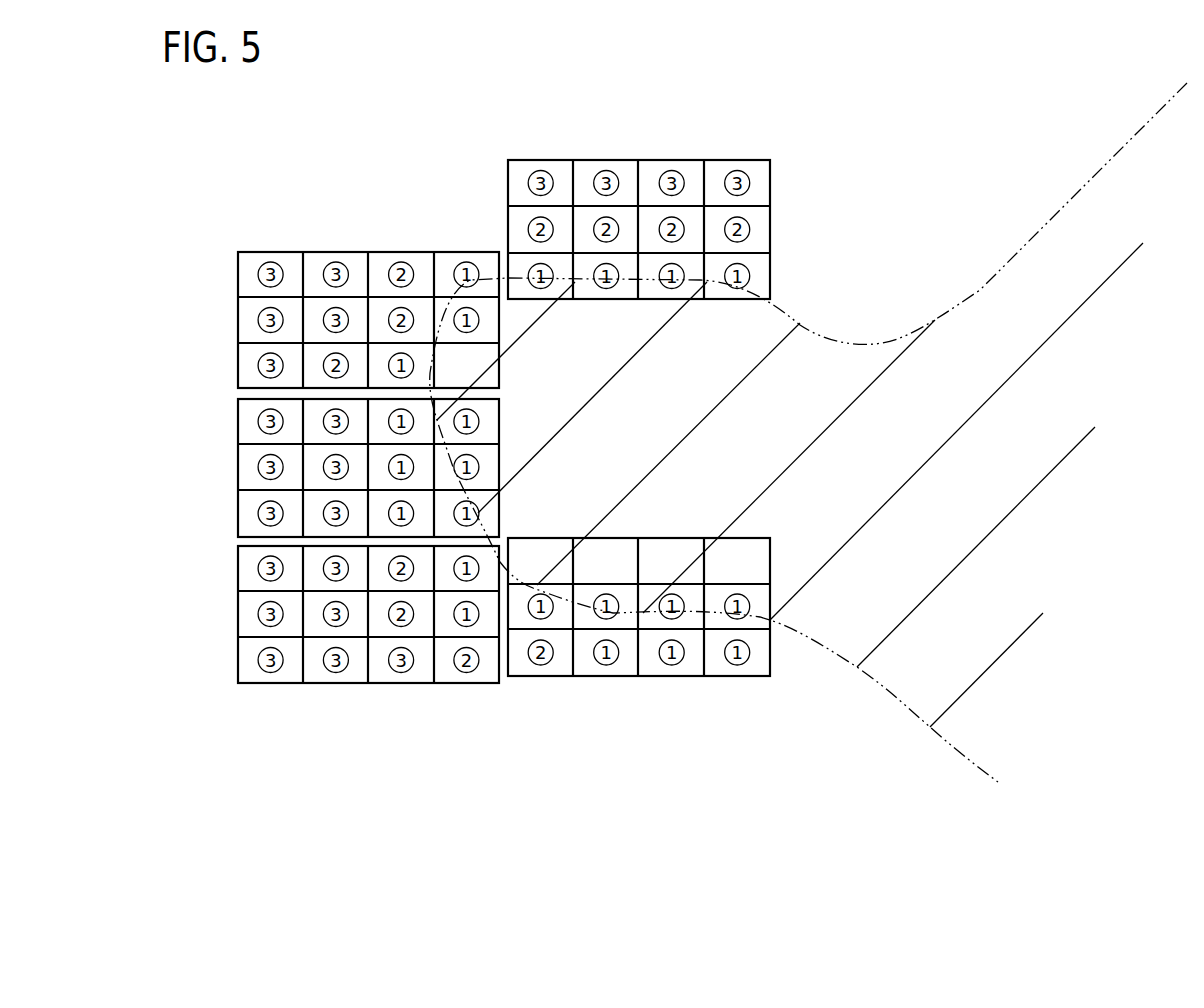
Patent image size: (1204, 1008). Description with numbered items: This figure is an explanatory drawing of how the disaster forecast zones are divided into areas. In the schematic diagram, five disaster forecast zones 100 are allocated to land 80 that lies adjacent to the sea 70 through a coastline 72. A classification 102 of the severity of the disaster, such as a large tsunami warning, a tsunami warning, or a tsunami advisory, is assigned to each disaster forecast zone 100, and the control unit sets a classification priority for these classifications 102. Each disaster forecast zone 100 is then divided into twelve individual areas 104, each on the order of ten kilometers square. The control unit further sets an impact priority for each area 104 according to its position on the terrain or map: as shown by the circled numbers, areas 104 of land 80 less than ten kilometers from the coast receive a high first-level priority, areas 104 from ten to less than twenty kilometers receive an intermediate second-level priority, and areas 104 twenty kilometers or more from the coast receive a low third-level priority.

The sea 70 is at (1102, 381).
The coastline 72 is at (897, 340).
The land 80 is at (1020, 160).
The disaster forecast zone 100 is at (273, 251).
The classification 102 is at (237, 273).
The area 104 is at (387, 258).